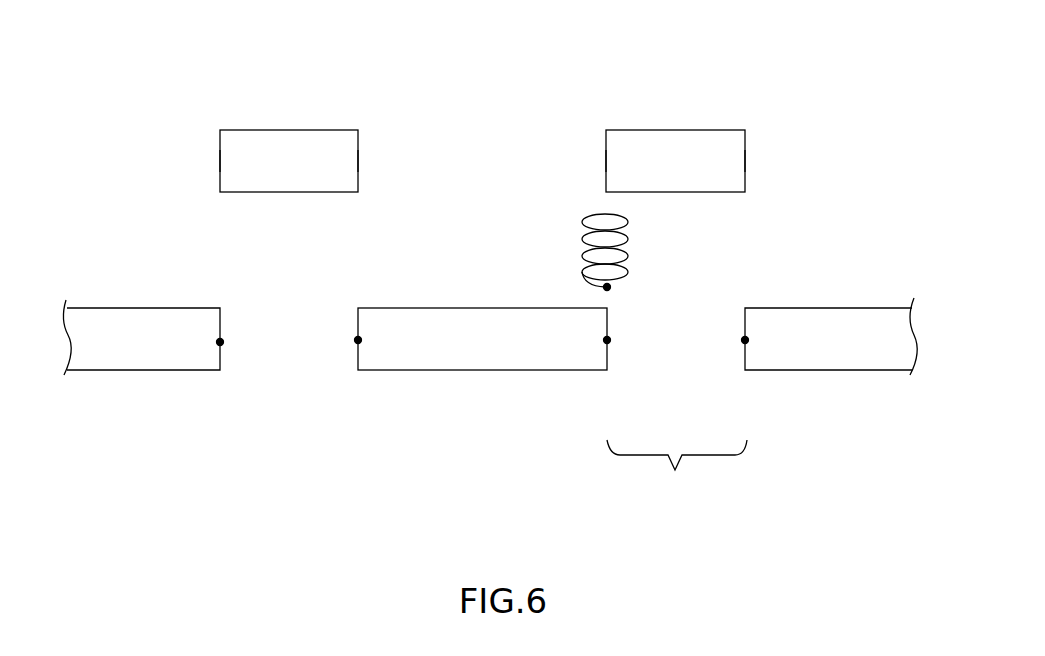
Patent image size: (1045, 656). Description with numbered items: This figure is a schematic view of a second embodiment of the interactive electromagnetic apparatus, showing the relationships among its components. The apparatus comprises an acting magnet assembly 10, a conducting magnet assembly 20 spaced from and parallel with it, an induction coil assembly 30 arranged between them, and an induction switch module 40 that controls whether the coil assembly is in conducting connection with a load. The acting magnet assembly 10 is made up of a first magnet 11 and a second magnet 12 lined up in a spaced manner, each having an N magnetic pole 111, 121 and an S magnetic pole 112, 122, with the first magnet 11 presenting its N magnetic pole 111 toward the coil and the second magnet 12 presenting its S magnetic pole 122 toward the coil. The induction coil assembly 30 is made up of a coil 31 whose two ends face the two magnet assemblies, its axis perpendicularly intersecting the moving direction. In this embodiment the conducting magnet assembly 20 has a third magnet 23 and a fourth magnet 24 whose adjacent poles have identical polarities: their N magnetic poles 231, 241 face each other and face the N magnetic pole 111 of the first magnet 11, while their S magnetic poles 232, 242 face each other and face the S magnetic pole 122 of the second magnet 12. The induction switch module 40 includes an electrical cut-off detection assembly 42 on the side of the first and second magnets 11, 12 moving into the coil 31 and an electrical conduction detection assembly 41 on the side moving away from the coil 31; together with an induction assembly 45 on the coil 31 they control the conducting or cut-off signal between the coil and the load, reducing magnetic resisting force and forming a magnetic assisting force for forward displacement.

The acting magnet assembly 10 is at (125, 472).
The first magnet 11 is at (425, 370).
The N magnetic pole 111 is at (483, 308).
The S magnetic pole 112 is at (483, 370).
The second magnet 12 is at (155, 370).
The N magnetic pole 121 is at (97, 370).
The S magnetic pole 122 is at (93, 308).
The conducting magnet assembly 20 is at (232, 95).
The third magnet 23 is at (290, 130).
The N magnetic pole 231 is at (358, 160).
The S magnetic pole 232 is at (220, 160).
The fourth magnet 24 is at (677, 130).
The N magnetic pole 241 is at (606, 158).
The S magnetic pole 242 is at (745, 158).
The induction coil assembly 30 is at (547, 235).
The coil 31 is at (627, 240).
The induction switch module 40 is at (677, 474).
The electrical conduction detection assembly 41 is at (358, 340).
The electrical cut-off detection assembly 42 is at (220, 342).
The induction assembly 45 is at (607, 287).